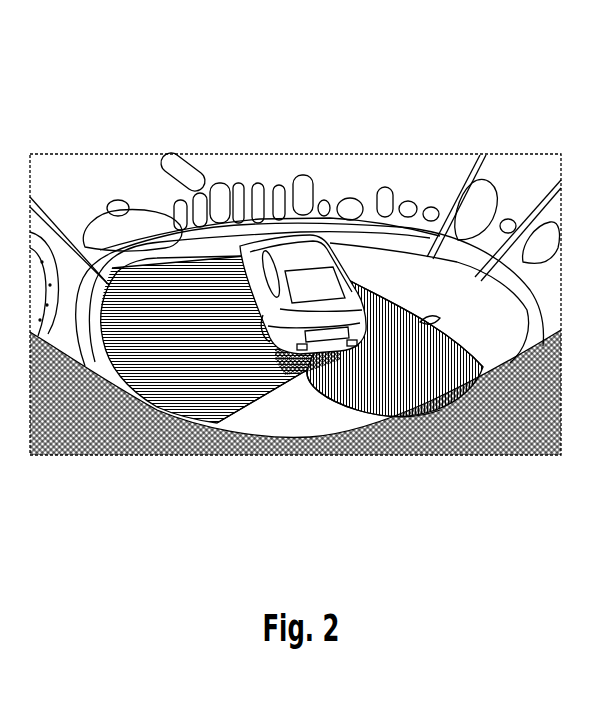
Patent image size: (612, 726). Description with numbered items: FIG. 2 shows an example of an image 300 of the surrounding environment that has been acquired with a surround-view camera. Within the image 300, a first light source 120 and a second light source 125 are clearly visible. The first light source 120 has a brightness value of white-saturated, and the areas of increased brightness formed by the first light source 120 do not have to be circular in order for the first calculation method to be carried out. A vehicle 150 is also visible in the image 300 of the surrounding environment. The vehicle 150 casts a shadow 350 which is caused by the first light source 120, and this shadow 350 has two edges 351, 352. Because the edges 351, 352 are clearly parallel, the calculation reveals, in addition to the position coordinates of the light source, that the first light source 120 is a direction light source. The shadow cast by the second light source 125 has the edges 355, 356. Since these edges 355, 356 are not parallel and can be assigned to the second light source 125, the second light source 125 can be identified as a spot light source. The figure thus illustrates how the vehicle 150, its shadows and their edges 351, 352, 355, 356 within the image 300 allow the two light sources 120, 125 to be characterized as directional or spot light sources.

The image of the surrounding environment 300 is at (404, 84).
The first light source 120 is at (173, 157).
The second light source 125 is at (480, 160).
The vehicle 150 is at (290, 263).
The shadow 350 is at (397, 377).
The edge 351 is at (345, 397).
The edge 352 is at (407, 317).
The edge 355 is at (210, 260).
The edge 356 is at (277, 393).